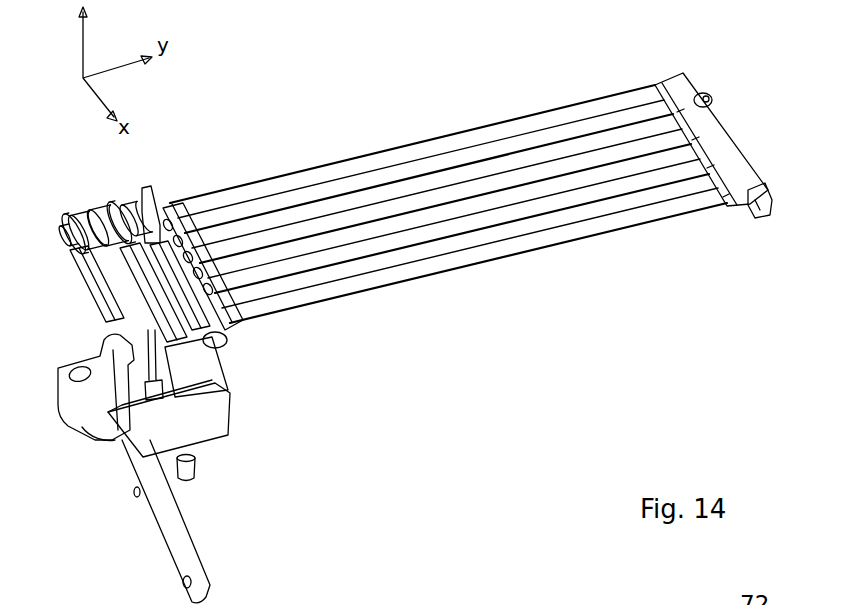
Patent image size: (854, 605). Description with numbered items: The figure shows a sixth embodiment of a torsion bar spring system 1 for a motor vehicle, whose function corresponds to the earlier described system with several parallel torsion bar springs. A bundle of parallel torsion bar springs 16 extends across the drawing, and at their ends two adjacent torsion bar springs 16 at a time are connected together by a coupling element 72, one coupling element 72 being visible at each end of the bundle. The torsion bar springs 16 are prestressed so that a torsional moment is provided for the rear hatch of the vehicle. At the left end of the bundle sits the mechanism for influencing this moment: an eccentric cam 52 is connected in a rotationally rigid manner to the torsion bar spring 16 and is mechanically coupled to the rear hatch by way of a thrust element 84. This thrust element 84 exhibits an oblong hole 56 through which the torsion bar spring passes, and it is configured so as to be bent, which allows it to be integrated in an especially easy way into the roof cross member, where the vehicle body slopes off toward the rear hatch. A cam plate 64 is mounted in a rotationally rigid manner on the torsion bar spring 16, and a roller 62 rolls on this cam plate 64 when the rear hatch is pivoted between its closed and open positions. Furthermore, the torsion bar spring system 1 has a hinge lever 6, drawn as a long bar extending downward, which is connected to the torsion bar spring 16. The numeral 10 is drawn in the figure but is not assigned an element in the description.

The torsion bar spring system 1 is at (418, 128).
The hinge lever 6 is at (183, 547).
The holder 10 is at (104, 499).
The torsion bar spring 16 is at (497, 252).
The eccentric cam 52 is at (93, 225).
The oblong hole 56 is at (124, 432).
The roller 62 is at (240, 420).
The cam plate 64 is at (222, 368).
The coupling element 72 is at (712, 102).
The thrust element 84 is at (150, 309).